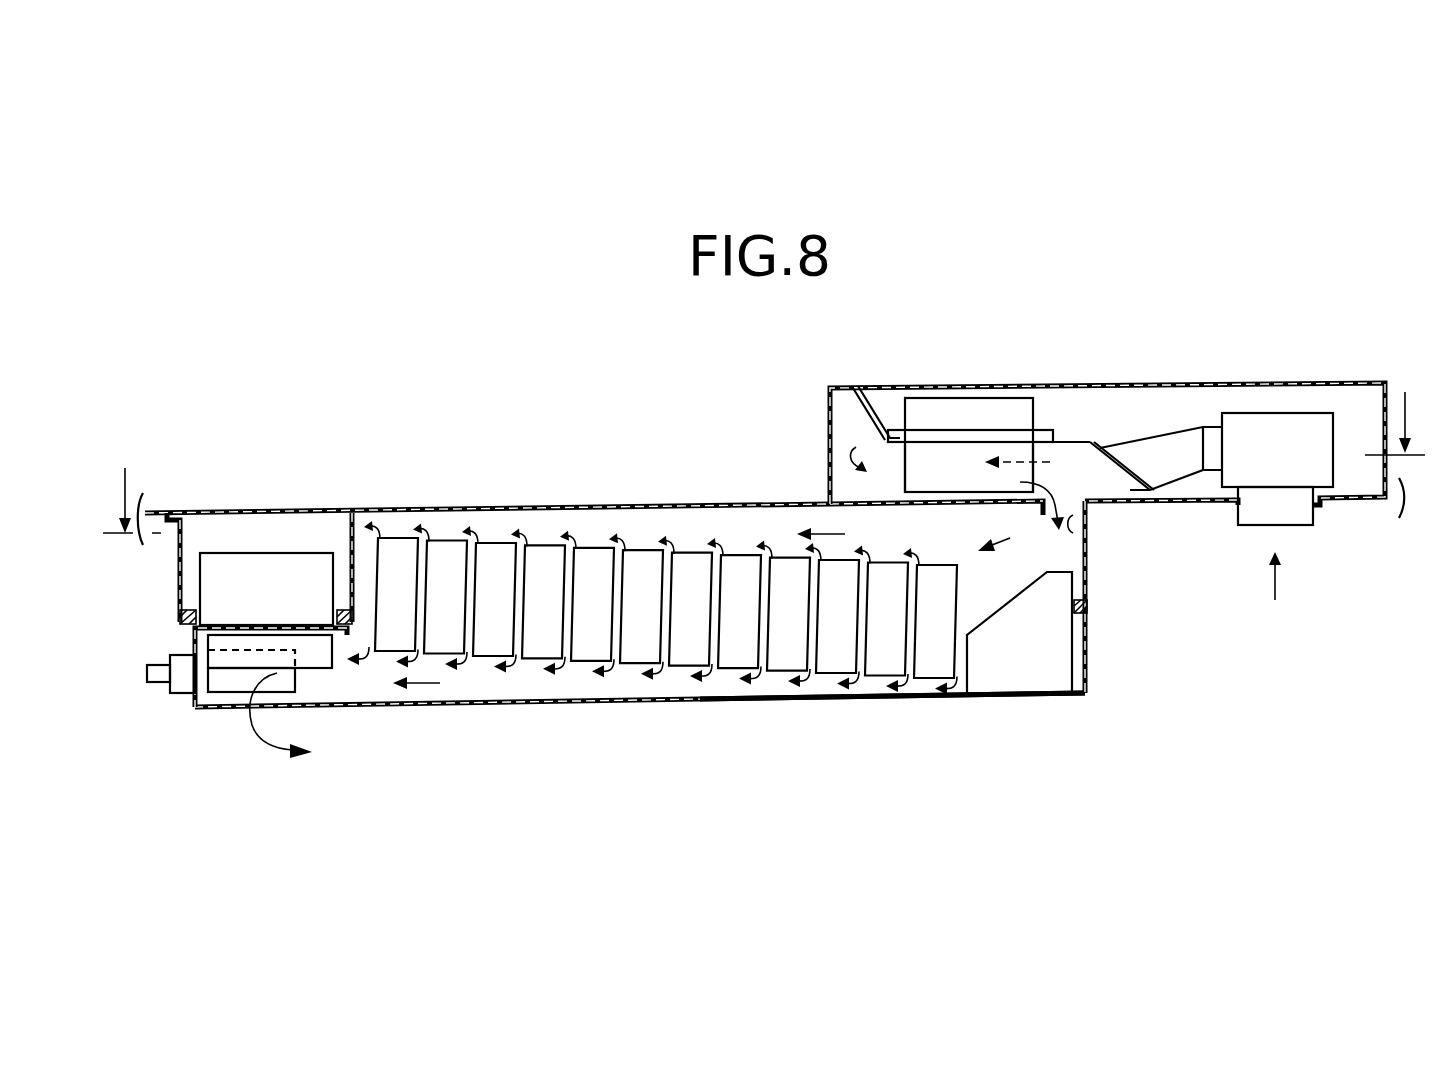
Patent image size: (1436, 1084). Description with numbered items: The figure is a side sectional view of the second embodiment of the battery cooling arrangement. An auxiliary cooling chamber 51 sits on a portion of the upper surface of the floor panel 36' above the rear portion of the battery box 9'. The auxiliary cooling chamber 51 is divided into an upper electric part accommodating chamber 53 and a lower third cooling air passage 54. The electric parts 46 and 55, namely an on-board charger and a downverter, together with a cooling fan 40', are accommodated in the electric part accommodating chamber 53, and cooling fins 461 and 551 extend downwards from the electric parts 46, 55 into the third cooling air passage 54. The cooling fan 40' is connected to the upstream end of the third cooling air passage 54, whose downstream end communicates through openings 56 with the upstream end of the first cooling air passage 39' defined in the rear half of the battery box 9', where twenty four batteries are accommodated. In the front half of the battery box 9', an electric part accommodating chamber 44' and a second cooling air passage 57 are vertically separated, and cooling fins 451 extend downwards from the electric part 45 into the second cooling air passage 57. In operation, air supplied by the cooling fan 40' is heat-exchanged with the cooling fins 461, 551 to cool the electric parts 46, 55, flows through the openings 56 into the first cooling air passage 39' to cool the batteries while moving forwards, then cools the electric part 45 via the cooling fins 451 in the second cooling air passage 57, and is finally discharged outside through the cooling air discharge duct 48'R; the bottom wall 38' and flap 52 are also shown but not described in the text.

The battery box 9' is at (892, 749).
The floor panel 36' is at (487, 467).
The lower wall of battery housing 38' is at (640, 729).
The first cooling air passage 39' is at (849, 478).
The cooling fan 40' is at (1280, 458).
The electric part accommodating chamber 44' is at (259, 568).
The electric part 45 is at (235, 551).
The cooling fins 451 is at (317, 652).
The electric part 46 is at (976, 397).
The electric part 55 is at (960, 397).
The cooling fins 461 is at (954, 501).
The cooling fins 551 is at (938, 482).
The cooling air discharge duct 48'R is at (170, 718).
The auxiliary cooling chamber 51 is at (1090, 386).
The flap 52 is at (1080, 448).
The electric part accommodating chamber 53 is at (1185, 424).
The third cooling air passage 54 is at (1105, 494).
The openings 56 is at (1093, 540).
The second cooling air passage 57 is at (229, 700).